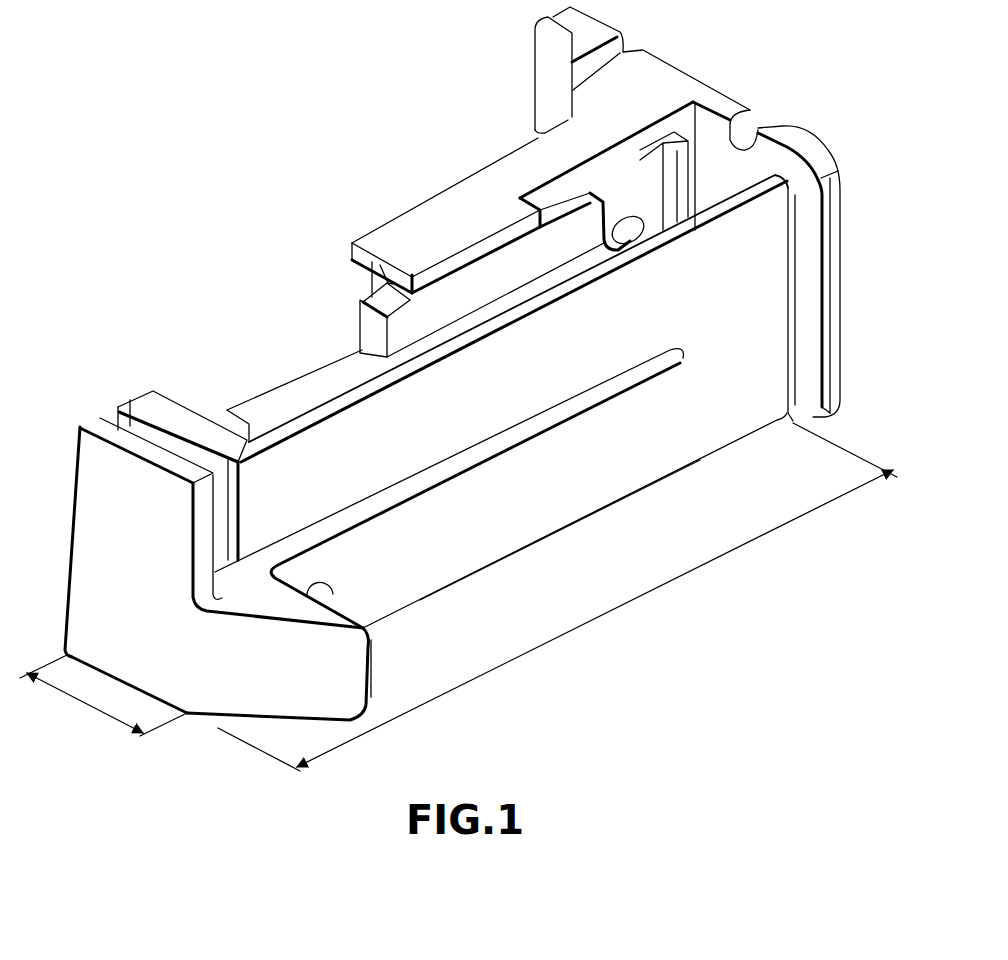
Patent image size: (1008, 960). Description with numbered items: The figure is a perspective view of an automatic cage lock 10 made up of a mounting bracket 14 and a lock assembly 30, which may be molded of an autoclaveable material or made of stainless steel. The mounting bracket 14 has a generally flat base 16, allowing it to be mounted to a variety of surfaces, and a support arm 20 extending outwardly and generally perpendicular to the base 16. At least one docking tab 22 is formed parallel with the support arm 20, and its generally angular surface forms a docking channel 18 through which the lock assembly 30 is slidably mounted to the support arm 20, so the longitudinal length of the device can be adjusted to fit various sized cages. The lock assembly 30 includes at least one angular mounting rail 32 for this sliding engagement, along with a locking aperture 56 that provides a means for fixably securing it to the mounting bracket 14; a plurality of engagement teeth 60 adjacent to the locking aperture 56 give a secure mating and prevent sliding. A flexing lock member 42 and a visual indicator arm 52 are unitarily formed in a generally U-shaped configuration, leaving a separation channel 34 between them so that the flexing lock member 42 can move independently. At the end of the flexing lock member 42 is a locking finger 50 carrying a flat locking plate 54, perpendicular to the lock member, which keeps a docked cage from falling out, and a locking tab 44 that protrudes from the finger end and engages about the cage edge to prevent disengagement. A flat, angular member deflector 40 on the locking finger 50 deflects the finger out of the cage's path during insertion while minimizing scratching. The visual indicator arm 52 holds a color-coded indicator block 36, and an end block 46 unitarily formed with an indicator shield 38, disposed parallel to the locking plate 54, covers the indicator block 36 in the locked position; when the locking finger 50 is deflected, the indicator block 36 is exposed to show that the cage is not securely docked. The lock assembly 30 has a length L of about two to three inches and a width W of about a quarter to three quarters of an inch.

The automatic cage lock 10 is at (303, 110).
The mounting bracket 14 is at (665, 82).
The base 16 is at (755, 170).
The docking channel 18 is at (378, 270).
The support arm 20 is at (455, 212).
The docking tab 22 is at (452, 267).
The lock assembly 30 is at (270, 407).
The mounting rail 32 is at (380, 297).
The separation channel 34 is at (593, 397).
The indicator block 36 is at (150, 410).
The indicator shield 38 is at (110, 512).
The member deflector 40 is at (275, 682).
The flexing lock member 42 is at (528, 512).
The locking tab 44 is at (370, 670).
The end block 46 is at (127, 627).
The locking finger 50 is at (327, 663).
The visual indicator arm 52 is at (505, 411).
The locking plate 54 is at (330, 587).
The locking aperture 56 is at (640, 236).
The engagement teeth 60 is at (640, 250).
The length L is at (587, 623).
The width W is at (87, 703).